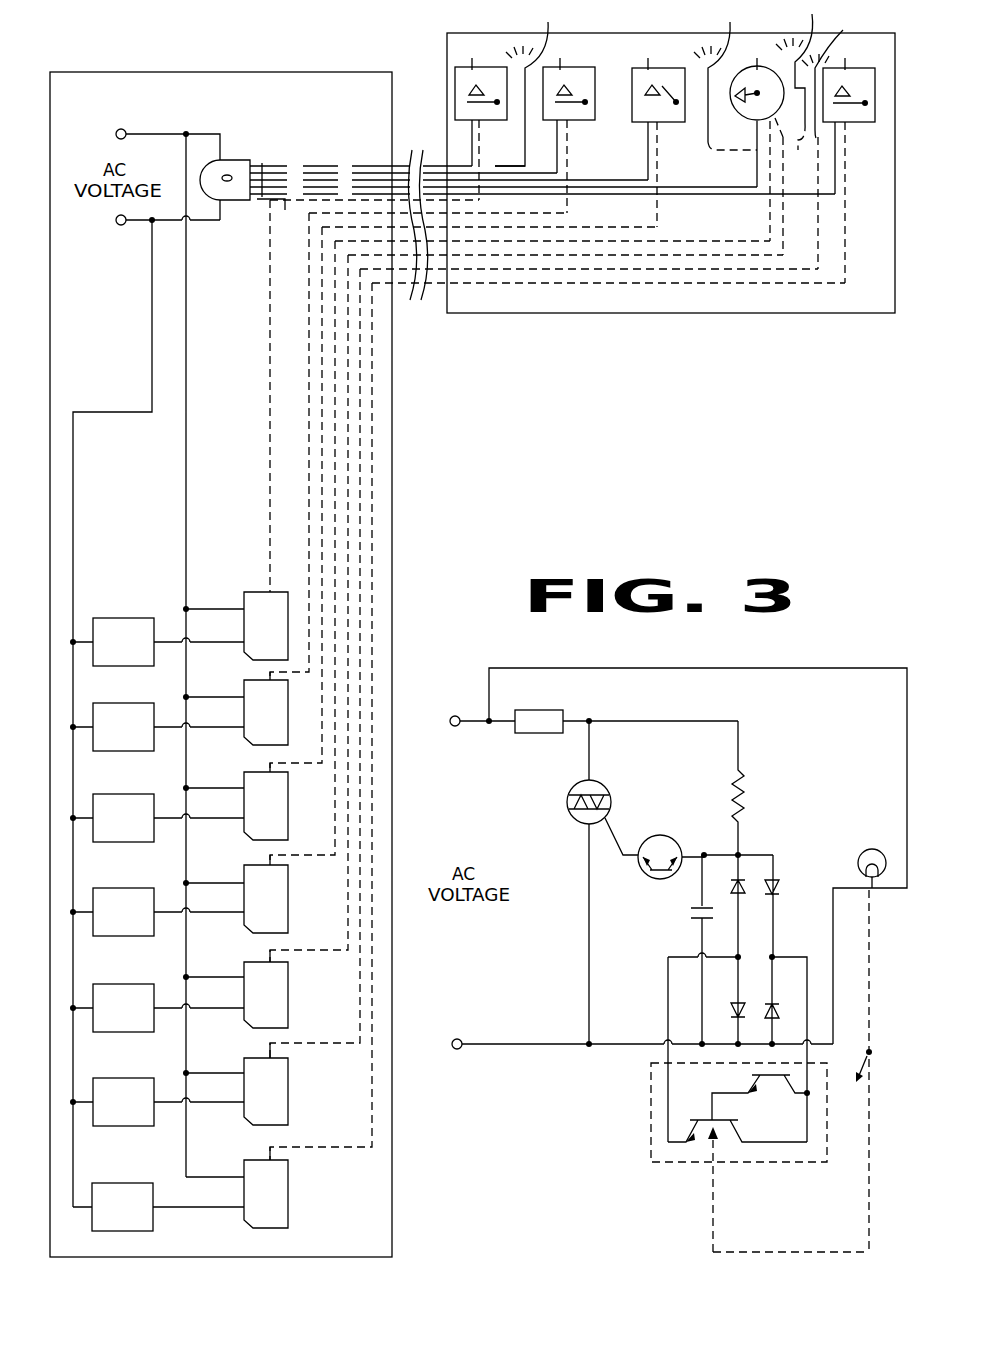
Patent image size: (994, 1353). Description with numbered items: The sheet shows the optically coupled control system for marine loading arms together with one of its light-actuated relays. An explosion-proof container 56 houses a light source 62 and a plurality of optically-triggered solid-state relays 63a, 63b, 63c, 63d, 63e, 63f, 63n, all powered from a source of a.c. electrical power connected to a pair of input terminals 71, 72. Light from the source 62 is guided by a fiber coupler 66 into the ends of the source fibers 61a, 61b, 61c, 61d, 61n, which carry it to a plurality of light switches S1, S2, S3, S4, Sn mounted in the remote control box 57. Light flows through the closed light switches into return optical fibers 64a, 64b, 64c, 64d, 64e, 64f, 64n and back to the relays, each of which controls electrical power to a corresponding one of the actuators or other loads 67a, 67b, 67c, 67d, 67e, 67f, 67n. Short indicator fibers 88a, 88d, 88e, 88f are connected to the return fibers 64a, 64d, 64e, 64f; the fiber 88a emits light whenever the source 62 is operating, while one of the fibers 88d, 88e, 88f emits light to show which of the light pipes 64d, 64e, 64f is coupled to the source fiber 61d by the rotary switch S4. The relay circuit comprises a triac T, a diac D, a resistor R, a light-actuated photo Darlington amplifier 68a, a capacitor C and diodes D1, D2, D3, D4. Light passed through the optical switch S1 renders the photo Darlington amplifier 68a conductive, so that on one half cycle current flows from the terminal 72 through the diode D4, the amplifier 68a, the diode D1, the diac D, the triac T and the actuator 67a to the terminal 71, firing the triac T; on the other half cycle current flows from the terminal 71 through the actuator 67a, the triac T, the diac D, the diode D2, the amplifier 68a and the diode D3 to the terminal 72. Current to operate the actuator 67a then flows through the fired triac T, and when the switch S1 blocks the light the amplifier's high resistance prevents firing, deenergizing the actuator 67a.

In FIG. 2, the explosion-proof container 56 is at (150, 72).
In FIG. 2, the remote control box 57 is at (728, 313).
In FIG. 2, the light source 62 is at (236, 160).
In FIG. 3, the light source 62 is at (868, 850).
In FIG. 2, the fiber coupler 66 is at (265, 165).
In FIG. 2, the source fiber 61a is at (368, 166).
In FIG. 2, the source fiber 61b is at (560, 147).
In FIG. 2, the source fiber 61c is at (650, 180).
In FIG. 2, the source fiber 61d is at (757, 168).
In FIG. 2, the source fiber 61n is at (852, 170).
In FIG. 2, the return optical fiber 64a is at (270, 436).
In FIG. 3, the return optical fiber 64a is at (713, 1207).
In FIG. 2, the return optical fiber 64b is at (308, 460).
In FIG. 2, the return optical fiber 64c is at (670, 212).
In FIG. 2, the return optical fiber 64d is at (735, 222).
In FIG. 2, the return optical fiber 64e is at (783, 236).
In FIG. 2, the return optical fiber 64f is at (812, 264).
In FIG. 2, the return optical fiber 64n is at (858, 232).
In FIG. 2, the optically-triggered solid-state relay 63a is at (258, 606).
In FIG. 3, the optically-triggered solid-state relay 63a is at (764, 781).
In FIG. 2, the optically-triggered solid-state relay 63b is at (258, 694).
In FIG. 2, the optically-triggered solid-state relay 63c is at (258, 786).
In FIG. 2, the optically-triggered solid-state relay 63d is at (258, 879).
In FIG. 2, the optically-triggered solid-state relay 63e is at (258, 976).
In FIG. 2, the optically-triggered solid-state relay 63f is at (258, 1072).
In FIG. 2, the optically-triggered solid-state relay 63n is at (258, 1174).
In FIG. 2, the actuator 67a is at (146, 655).
In FIG. 3, the actuator 67a is at (532, 705).
In FIG. 2, the load 67b is at (146, 740).
In FIG. 2, the load 67c is at (146, 831).
In FIG. 2, the load 67d is at (146, 925).
In FIG. 2, the load 67e is at (146, 1021).
In FIG. 2, the load 67f is at (146, 1115).
In FIG. 2, the load 67n is at (158, 1207).
In FIG. 3, the photo Darlington amplifier 68a is at (651, 1097).
In FIG. 2, the input terminal 71 is at (118, 225).
In FIG. 3, the input terminal 71 is at (466, 702).
In FIG. 2, the input terminal 72 is at (121, 129).
In FIG. 3, the input terminal 72 is at (456, 1039).
In FIG. 2, the indicator fiber 88a is at (524, 85).
In FIG. 2, the indicator fiber 88d is at (732, 77).
In FIG. 2, the indicator fiber 88e is at (806, 75).
In FIG. 2, the indicator fiber 88f is at (842, 76).
In FIG. 2, the light switch S1 is at (481, 104).
In FIG. 3, the light switch S1 is at (878, 1071).
In FIG. 2, the light switch S2 is at (569, 81).
In FIG. 2, the light switch S3 is at (658, 82).
In FIG. 2, the rotary switch S4 is at (757, 81).
In FIG. 2, the light switch Sn is at (849, 82).
In FIG. 3, the triac T is at (597, 782).
In FIG. 3, the diac D is at (653, 836).
In FIG. 3, the resistor R is at (730, 780).
In FIG. 3, the capacitor C is at (695, 910).
In FIG. 3, the diode D1 is at (728, 890).
In FIG. 3, the diode D2 is at (780, 885).
In FIG. 3, the diode D3 is at (730, 1008).
In FIG. 3, the diode D4 is at (775, 1005).